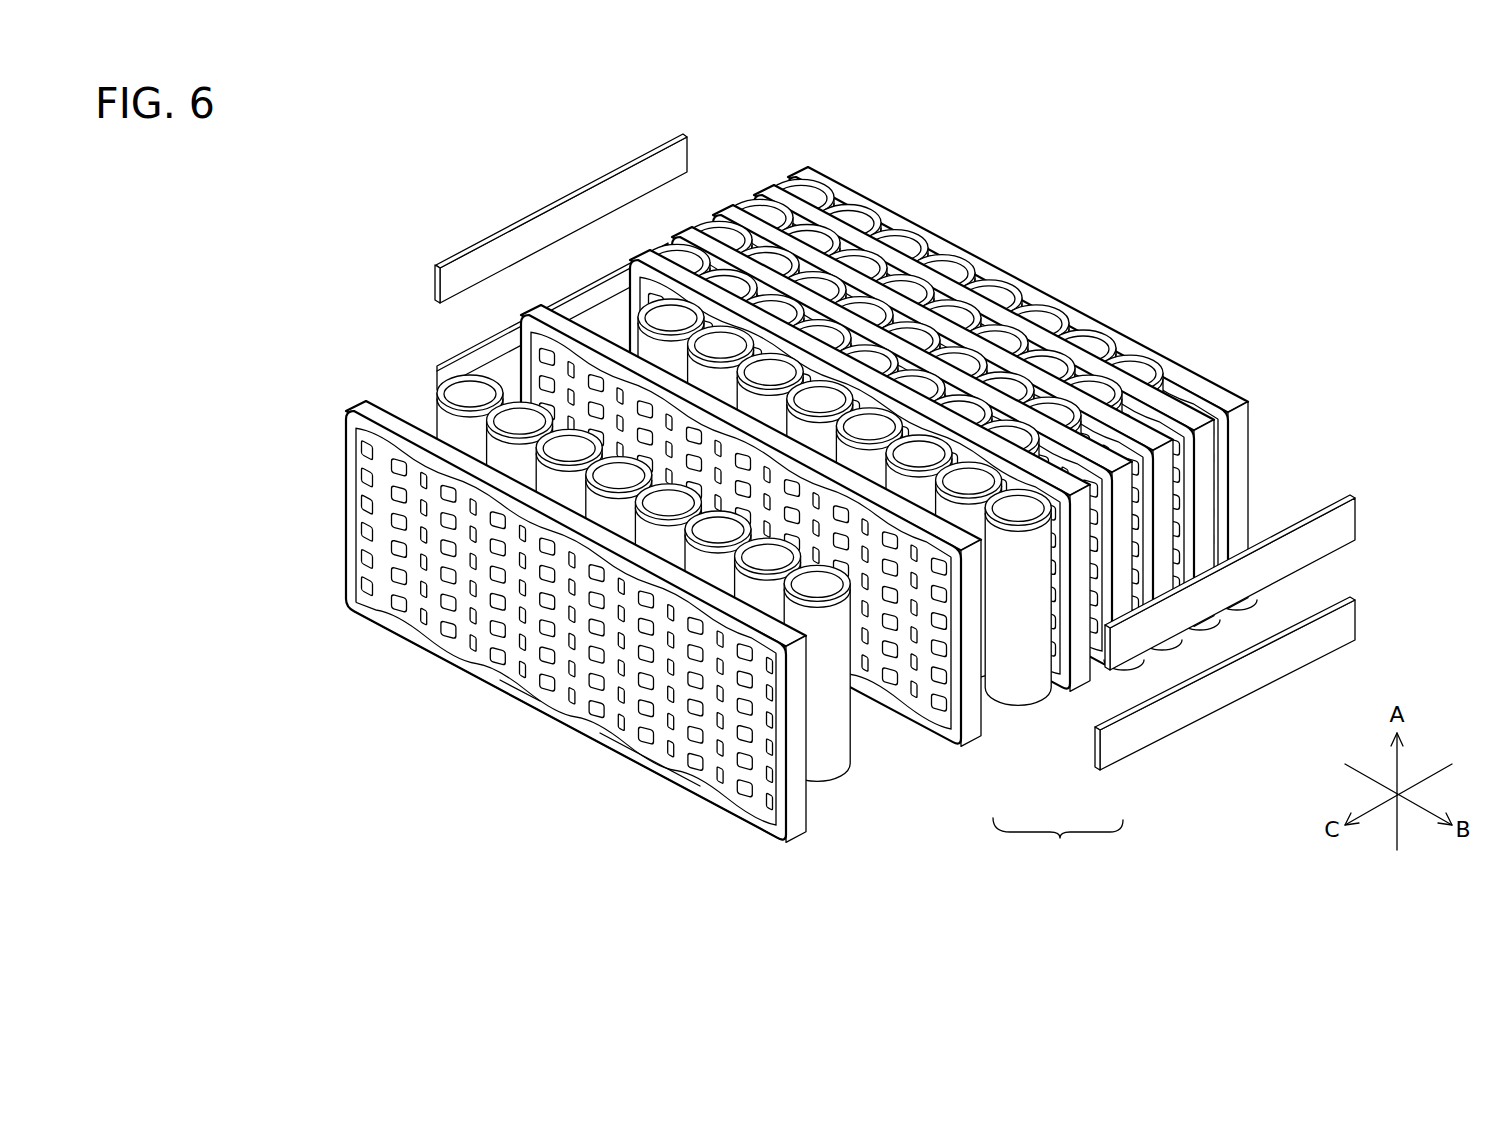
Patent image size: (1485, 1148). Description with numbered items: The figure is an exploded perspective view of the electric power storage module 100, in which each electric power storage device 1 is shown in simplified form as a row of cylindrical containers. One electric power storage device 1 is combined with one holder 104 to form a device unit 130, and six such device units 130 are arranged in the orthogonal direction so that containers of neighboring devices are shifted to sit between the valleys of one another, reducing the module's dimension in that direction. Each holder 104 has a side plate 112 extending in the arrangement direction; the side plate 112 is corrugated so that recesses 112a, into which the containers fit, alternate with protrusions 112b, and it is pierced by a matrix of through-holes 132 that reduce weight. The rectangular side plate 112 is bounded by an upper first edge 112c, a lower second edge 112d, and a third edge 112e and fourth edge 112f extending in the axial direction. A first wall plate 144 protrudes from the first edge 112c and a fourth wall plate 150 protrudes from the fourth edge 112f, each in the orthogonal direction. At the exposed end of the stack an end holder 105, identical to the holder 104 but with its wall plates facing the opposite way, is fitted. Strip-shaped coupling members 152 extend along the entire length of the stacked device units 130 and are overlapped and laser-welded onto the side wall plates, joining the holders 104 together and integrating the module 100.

The electric power storage device 1 is at (848, 758).
The electric power storage module 100 is at (765, 916).
The holder 104 is at (344, 611).
The end holder 105 is at (806, 168).
The side plate 112 is at (571, 595).
The recess 112a is at (673, 767).
The protrusion 112b is at (657, 750).
The first edge 112c is at (362, 432).
The second edge 112d is at (517, 702).
The third edge 112e is at (350, 510).
The fourth edge 112f is at (782, 827).
The device unit 130 is at (1058, 844).
The through-hole 132 is at (490, 650).
The first wall plate 144 is at (387, 416).
The fourth wall plate 150 is at (805, 792).
The coupling member 152 is at (680, 160).